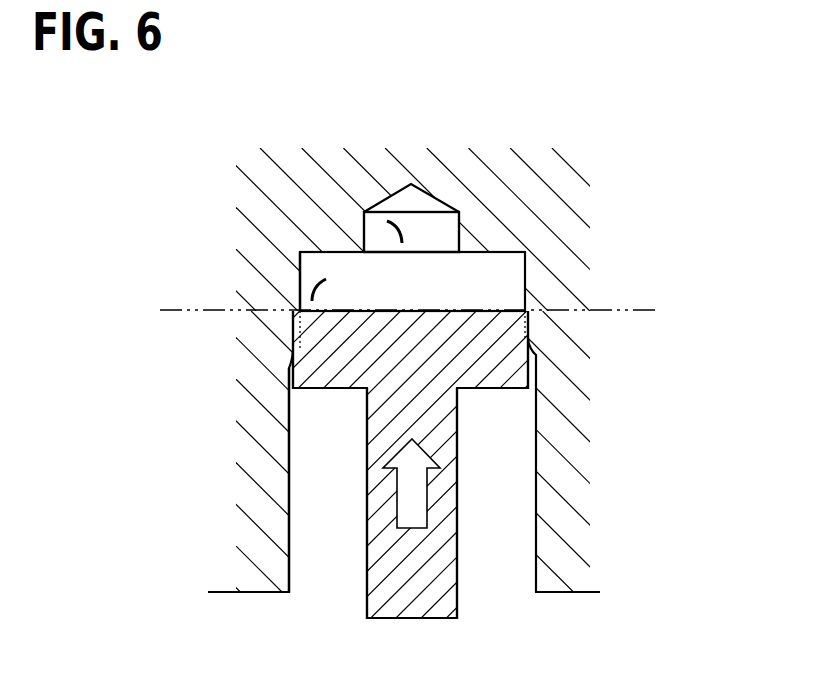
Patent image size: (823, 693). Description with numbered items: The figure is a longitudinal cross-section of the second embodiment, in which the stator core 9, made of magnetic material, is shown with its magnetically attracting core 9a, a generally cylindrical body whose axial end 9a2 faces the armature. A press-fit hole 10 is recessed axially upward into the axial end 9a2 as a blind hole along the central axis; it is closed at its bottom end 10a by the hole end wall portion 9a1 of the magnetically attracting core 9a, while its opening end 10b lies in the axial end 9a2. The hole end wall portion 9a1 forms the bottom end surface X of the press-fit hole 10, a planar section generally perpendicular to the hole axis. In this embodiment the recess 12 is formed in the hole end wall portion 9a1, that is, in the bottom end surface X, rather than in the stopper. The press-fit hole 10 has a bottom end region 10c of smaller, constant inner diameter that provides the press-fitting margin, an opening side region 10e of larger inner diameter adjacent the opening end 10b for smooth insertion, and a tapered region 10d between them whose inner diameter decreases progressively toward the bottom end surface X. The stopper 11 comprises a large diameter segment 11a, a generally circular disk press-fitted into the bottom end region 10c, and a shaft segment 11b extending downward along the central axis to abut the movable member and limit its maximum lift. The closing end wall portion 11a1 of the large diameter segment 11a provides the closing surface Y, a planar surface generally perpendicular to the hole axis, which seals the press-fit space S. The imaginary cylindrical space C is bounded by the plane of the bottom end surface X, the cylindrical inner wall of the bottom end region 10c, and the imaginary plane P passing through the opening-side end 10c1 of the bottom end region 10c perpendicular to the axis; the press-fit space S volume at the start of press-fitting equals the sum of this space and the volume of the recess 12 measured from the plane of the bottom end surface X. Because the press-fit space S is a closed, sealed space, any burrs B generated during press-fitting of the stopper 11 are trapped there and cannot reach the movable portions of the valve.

The stator core 9 is at (254, 530).
The magnetically attracting core 9a is at (258, 592).
The hole end wall portion 9a1 is at (298, 254).
The axial end 9a2 is at (210, 592).
The press-fit hole 10 is at (289, 440).
The bottom end 10a is at (477, 253).
The opening end 10b is at (538, 592).
The bottom end region 10c is at (300, 278).
The opening-side end 10c1 is at (413, 273).
The tapered region 10d is at (292, 370).
The opening side region 10e is at (289, 520).
The stopper 11 is at (677, 388).
The large diameter segment 11a is at (492, 388).
The closing end wall portion 11a1 is at (485, 310).
The shaft segment 11b is at (456, 477).
The recess 12 is at (437, 237).
The burrs B is at (307, 312).
The imaginary cylindrical space C is at (430, 275).
The press-fit space S is at (418, 273).
The bottom end surface X is at (512, 262).
The closing surface Y is at (492, 308).
The imaginary plane P is at (657, 312).